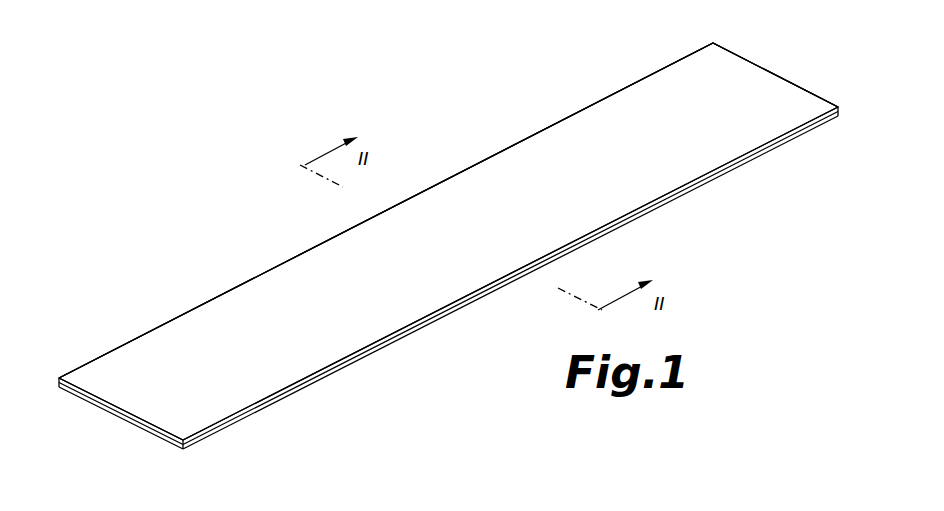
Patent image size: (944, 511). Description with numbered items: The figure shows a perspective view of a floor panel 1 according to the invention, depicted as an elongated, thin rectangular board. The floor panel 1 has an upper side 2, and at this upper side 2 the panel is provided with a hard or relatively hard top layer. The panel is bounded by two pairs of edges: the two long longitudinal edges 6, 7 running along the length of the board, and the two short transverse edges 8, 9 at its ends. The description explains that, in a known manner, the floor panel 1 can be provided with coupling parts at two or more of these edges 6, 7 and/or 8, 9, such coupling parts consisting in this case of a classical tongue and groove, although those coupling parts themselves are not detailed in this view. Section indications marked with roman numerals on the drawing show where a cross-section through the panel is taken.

The floor panel 1 is at (500, 102).
The upper side 2 is at (631, 98).
The edge 6 is at (258, 266).
The edge 7 is at (443, 324).
The edge 8 is at (129, 429).
The edge 9 is at (780, 68).